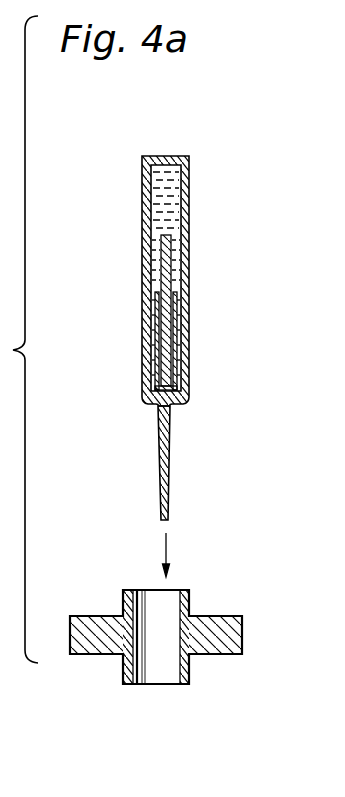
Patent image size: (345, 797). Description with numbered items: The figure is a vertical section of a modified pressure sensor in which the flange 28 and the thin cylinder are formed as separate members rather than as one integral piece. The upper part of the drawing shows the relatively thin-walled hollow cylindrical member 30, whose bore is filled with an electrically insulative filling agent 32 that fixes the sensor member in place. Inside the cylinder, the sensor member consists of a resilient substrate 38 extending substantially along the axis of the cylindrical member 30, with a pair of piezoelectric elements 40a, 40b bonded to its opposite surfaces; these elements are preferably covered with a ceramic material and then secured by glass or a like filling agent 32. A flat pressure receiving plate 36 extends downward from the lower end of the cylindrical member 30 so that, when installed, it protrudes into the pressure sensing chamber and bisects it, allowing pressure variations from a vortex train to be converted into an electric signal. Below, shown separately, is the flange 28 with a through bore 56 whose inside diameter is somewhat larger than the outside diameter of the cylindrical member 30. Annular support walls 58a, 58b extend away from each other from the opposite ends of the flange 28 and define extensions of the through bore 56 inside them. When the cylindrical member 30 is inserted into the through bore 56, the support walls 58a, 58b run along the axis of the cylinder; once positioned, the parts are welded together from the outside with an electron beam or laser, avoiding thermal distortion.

The hollow cylindrical member 30 is at (205, 186).
The filling agent 32 is at (168, 212).
The resilient substrate 38 is at (170, 307).
The piezoelectric element 40a is at (157, 329).
The piezoelectric element 40b is at (175, 322).
The pressure receiving plate 36 is at (168, 460).
The flange 28 is at (222, 616).
The annular support wall 58a is at (123, 598).
The annular support wall 58b is at (123, 670).
The through bore 56 is at (170, 655).